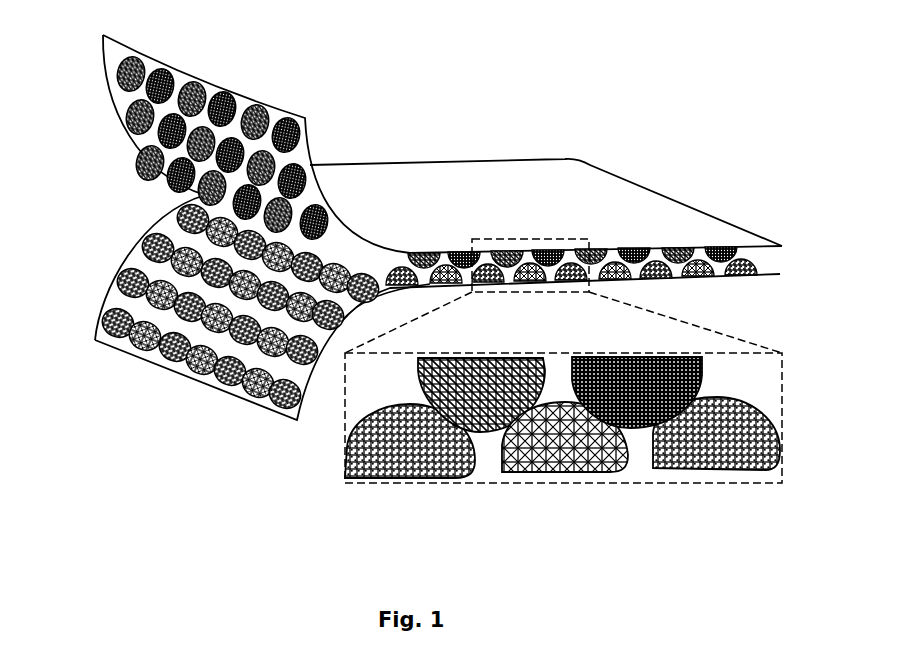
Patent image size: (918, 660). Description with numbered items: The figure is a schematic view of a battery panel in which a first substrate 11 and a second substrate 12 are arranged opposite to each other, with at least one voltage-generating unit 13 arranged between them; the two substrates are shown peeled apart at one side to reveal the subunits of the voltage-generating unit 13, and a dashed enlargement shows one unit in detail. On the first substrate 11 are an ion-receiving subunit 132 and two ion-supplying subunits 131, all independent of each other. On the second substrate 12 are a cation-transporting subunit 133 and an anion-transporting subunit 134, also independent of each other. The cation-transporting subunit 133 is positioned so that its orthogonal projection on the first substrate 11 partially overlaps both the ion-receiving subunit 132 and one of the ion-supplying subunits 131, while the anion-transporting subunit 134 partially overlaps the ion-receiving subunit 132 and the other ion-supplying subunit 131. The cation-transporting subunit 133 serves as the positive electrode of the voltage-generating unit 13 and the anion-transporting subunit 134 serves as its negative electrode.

The first substrate 11 is at (133, 252).
The second substrate 12 is at (697, 205).
The voltage-generating unit 13 is at (783, 378).
The ion-supplying subunit 131 is at (398, 455).
The ion-receiving subunit 132 is at (563, 455).
The cation-transporting subunit 133 is at (507, 412).
The anion-transporting subunit 134 is at (648, 428).